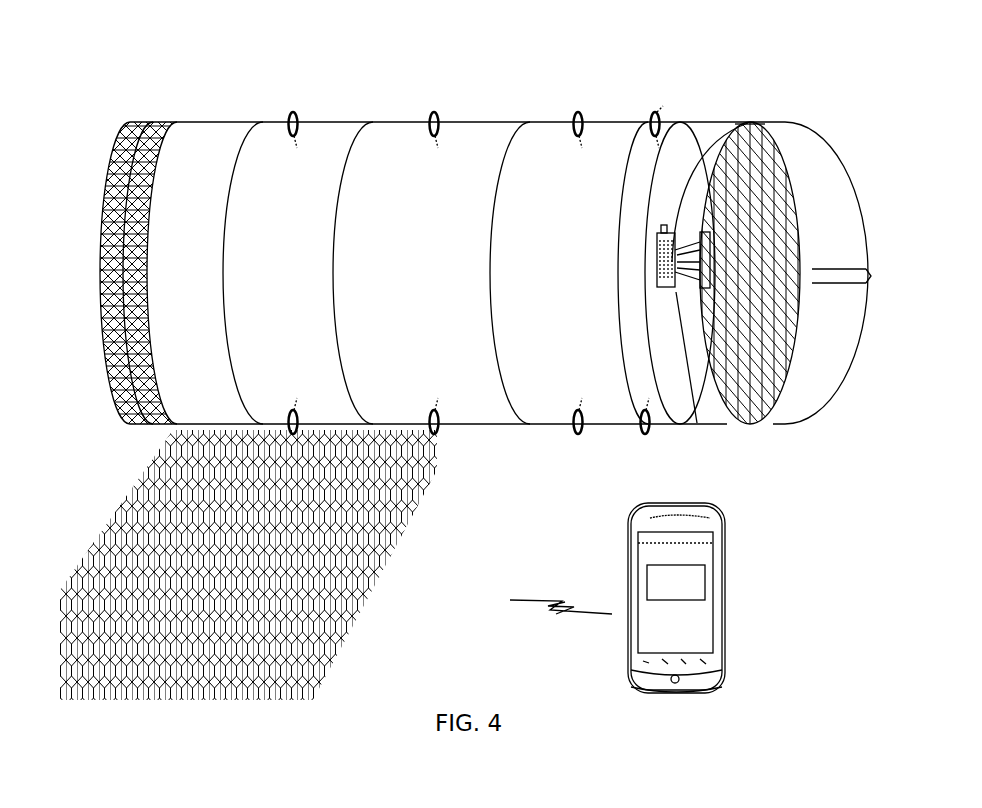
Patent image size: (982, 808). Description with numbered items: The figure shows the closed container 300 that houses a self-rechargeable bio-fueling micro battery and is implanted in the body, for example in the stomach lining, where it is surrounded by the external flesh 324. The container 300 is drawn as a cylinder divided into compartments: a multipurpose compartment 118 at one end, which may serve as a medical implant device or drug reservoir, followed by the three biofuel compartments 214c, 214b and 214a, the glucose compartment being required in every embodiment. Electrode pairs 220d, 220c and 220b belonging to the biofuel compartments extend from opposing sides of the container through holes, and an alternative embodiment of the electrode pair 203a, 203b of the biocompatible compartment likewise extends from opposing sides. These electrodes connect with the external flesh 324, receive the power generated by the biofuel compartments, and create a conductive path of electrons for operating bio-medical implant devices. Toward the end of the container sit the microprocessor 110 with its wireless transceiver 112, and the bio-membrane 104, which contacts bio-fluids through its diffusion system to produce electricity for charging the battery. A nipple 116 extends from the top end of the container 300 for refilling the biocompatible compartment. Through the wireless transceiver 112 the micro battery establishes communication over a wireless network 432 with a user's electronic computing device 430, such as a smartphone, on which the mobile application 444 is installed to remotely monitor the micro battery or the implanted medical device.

The container 300 is at (222, 33).
The multipurpose compartment 118 is at (148, 273).
The biofuel compartment 214c is at (261, 273).
The glucose biofuel compartment 214b is at (385, 273).
The glucose biofuel compartment 214a is at (536, 273).
The electrode pair 220d is at (296, 276).
The electrode pair 220c is at (424, 274).
The electrode pair 220b is at (574, 274).
The electrode 203a is at (656, 113).
The electrode 203b is at (652, 435).
The wireless transceiver 112 is at (690, 424).
The bio-membrane 104 is at (772, 171).
The microprocessor 110 is at (756, 108).
The nipple 116 is at (852, 286).
The external flesh 324 is at (442, 523).
The wireless network 432 is at (561, 597).
The electronic computing device 430 is at (722, 625).
The mobile application 444 is at (675, 592).